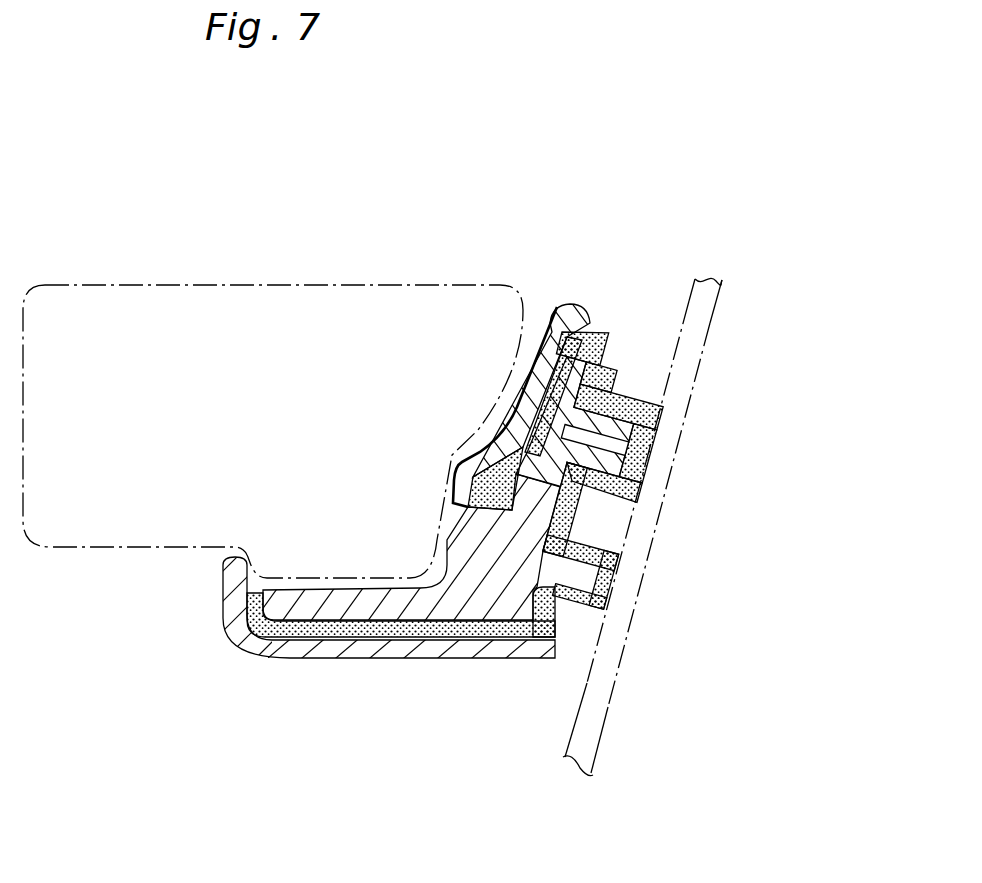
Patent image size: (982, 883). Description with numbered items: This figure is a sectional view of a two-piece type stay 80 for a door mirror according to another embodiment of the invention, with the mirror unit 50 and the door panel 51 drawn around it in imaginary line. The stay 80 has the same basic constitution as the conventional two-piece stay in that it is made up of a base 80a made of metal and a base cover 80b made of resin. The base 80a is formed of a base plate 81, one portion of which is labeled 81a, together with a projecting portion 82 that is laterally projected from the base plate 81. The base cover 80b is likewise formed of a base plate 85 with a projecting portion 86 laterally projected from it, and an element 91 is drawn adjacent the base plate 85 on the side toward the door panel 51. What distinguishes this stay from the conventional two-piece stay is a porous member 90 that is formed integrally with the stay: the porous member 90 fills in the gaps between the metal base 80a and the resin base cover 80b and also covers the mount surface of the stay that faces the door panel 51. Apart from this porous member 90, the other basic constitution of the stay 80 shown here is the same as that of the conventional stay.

The mirror unit 50 is at (267, 283).
The door panel 51 is at (705, 313).
The weatherstrip assembly 80 is at (403, 325).
The base 80a is at (330, 410).
The base cover 80b is at (770, 435).
The base plate 81 is at (537, 449).
The seal lip 81a is at (550, 408).
The projecting portion 82 is at (397, 592).
The base plate 85 is at (590, 322).
The projecting portion 86 is at (548, 646).
The porous member 90 is at (595, 357).
The engaging insert 91 is at (650, 459).